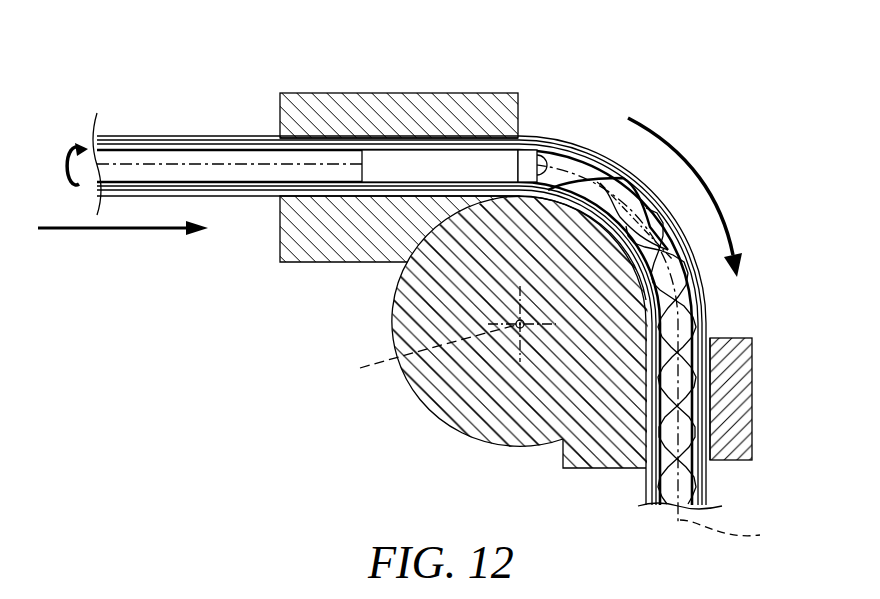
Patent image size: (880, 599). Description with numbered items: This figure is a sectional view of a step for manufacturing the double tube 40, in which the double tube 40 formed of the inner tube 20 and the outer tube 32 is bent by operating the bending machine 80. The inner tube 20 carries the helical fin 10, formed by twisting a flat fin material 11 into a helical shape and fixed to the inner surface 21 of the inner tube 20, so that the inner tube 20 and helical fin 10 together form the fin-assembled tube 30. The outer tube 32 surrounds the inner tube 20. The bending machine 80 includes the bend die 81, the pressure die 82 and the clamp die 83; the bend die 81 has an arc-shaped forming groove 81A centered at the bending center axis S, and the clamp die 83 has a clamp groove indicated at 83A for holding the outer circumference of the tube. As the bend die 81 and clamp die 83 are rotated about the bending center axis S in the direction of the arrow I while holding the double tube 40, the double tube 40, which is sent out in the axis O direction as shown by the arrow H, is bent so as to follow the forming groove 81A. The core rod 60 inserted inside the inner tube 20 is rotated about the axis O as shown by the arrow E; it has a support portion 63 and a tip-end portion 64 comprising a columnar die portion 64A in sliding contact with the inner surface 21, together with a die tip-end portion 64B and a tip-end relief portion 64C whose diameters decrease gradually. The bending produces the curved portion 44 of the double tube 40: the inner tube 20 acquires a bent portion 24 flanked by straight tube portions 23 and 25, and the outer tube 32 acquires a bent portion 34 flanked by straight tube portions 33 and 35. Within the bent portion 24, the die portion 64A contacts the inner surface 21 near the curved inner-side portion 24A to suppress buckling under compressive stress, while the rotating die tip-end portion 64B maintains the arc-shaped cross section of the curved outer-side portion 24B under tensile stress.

The helical fin 10 is at (680, 293).
The fin material 11 is at (672, 228).
The inner tube 20 is at (706, 318).
The inner surface 21 is at (678, 202).
The straight tube portion 23 is at (417, 143).
The bent portion 24 is at (661, 136).
The curved inner-side portion 24A is at (605, 176).
The curved outer-side portion 24B is at (573, 180).
The straight tube portion 25 is at (700, 378).
The fin-assembled tube 30 is at (749, 356).
The outer tube 32 is at (152, 140).
The straight tube portion 33 is at (385, 138).
The bent portion 34 is at (648, 173).
The straight tube portion 35 is at (712, 350).
The double tube 40 is at (109, 136).
The curved portion 44 is at (665, 168).
The core rod 60 is at (200, 152).
The support portion 63 is at (257, 143).
The tip-end portion 64 is at (567, 168).
The die portion 64A is at (510, 140).
The die tip-end portion 64B is at (537, 143).
The tip-end relief portion 64C is at (605, 183).
The bending machine 80 is at (516, 359).
The bend die 81 is at (425, 387).
The forming groove 81A is at (657, 468).
The pressure die 82 is at (297, 100).
The clamp die 83 is at (743, 402).
The holding block contact surface 83A is at (342, 137).
The arrow E is at (65, 143).
The arrow H is at (130, 232).
The arrow I is at (742, 250).
The axis O is at (730, 534).
The bending center axis S is at (427, 358).